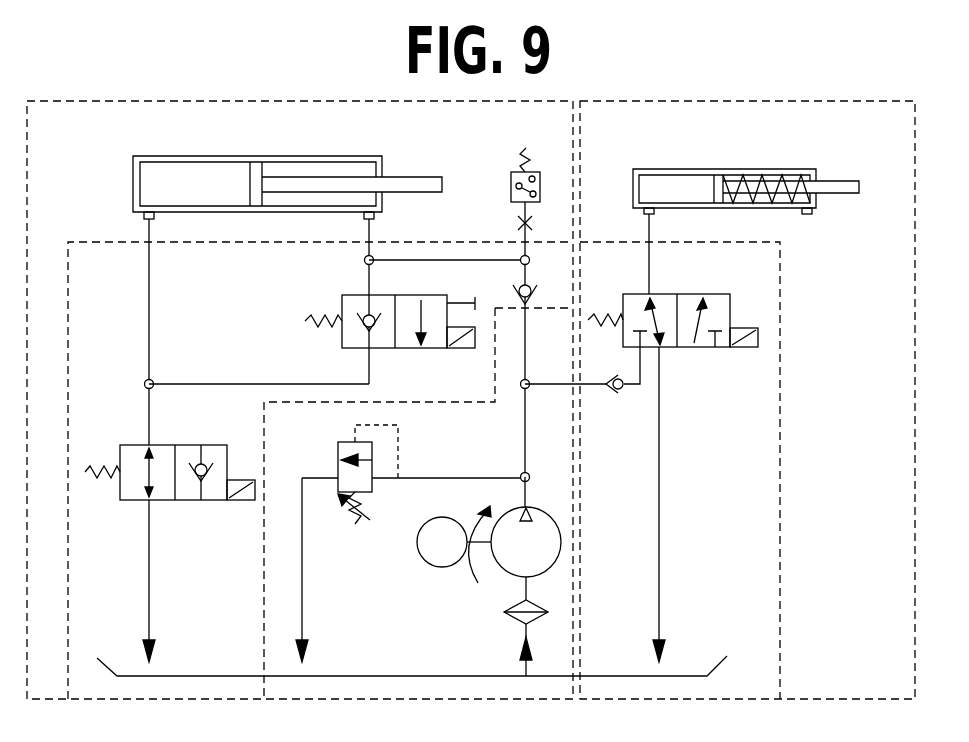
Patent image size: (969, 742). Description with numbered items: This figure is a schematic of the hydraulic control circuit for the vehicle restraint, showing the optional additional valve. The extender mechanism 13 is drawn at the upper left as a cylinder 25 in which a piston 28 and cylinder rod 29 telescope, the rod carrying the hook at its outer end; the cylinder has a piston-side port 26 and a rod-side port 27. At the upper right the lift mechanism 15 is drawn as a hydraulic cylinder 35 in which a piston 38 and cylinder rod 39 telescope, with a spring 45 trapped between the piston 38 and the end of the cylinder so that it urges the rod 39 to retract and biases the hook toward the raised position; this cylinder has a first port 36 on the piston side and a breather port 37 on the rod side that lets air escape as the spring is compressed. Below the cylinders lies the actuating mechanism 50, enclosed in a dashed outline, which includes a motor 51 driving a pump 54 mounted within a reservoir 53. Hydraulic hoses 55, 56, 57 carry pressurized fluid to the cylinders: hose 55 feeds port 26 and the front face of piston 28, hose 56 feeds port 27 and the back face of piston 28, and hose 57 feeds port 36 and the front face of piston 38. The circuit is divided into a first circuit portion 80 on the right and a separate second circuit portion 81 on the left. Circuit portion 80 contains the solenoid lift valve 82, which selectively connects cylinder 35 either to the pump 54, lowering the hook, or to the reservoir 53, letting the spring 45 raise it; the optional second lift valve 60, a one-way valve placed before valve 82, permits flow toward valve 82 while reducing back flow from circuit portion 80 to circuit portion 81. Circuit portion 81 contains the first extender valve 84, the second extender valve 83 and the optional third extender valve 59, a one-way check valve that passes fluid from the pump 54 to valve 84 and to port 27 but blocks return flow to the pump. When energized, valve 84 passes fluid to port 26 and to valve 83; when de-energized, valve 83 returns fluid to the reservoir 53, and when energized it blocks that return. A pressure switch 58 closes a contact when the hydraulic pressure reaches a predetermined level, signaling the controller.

The extender mechanism 13 is at (264, 169).
The lift mechanism 15 is at (743, 169).
The cylinder 25 is at (178, 156).
The port 26 is at (143, 216).
The port 27 is at (376, 222).
The piston 28 is at (258, 181).
The cylinder rod 29 is at (403, 177).
The hydraulic cylinder 35 is at (657, 169).
The first port 36 is at (645, 214).
The breather port 37 is at (808, 214).
The piston 38 is at (717, 190).
The cylinder rod 39 is at (847, 181).
The spring 45 is at (780, 180).
The actuating mechanism 50 is at (782, 597).
The motor 51 is at (447, 568).
The reservoir 53 is at (408, 675).
The pump 54 is at (543, 513).
The hydraulic hose 55 is at (151, 229).
The hydraulic hose 56 is at (366, 229).
The hydraulic hose 57 is at (646, 266).
The pressure switch 58 is at (541, 178).
The third extender valve 59 is at (536, 298).
The second lift valve 60 is at (625, 391).
The first circuit portion 80 is at (869, 62).
The second circuit portion 81 is at (82, 96).
The lift valve 82 is at (687, 350).
The second extender valve 83 is at (188, 502).
The first extender valve 84 is at (405, 350).